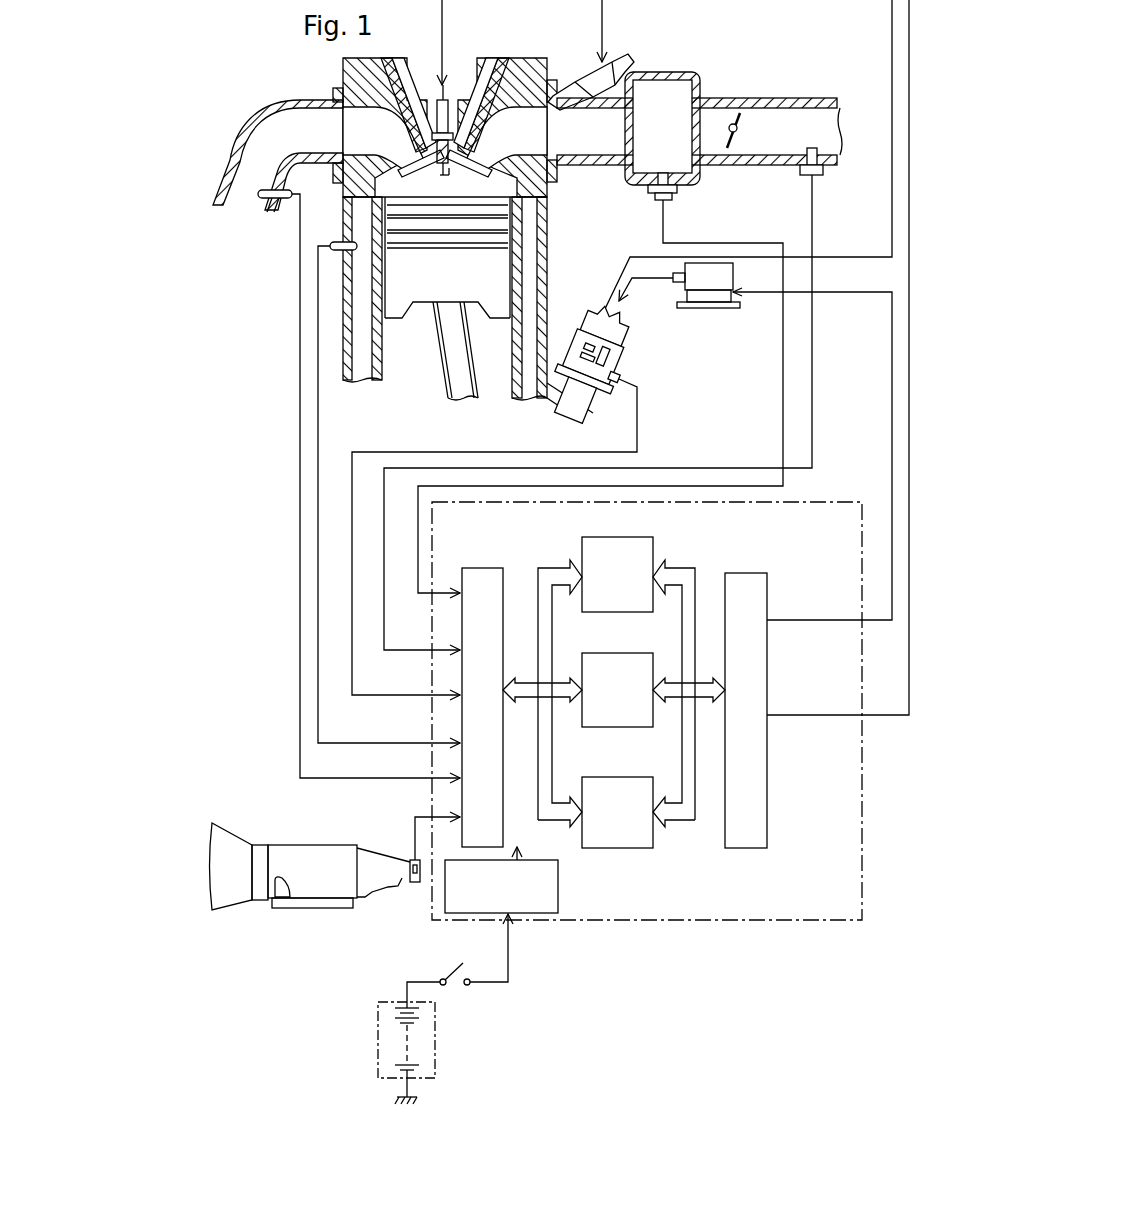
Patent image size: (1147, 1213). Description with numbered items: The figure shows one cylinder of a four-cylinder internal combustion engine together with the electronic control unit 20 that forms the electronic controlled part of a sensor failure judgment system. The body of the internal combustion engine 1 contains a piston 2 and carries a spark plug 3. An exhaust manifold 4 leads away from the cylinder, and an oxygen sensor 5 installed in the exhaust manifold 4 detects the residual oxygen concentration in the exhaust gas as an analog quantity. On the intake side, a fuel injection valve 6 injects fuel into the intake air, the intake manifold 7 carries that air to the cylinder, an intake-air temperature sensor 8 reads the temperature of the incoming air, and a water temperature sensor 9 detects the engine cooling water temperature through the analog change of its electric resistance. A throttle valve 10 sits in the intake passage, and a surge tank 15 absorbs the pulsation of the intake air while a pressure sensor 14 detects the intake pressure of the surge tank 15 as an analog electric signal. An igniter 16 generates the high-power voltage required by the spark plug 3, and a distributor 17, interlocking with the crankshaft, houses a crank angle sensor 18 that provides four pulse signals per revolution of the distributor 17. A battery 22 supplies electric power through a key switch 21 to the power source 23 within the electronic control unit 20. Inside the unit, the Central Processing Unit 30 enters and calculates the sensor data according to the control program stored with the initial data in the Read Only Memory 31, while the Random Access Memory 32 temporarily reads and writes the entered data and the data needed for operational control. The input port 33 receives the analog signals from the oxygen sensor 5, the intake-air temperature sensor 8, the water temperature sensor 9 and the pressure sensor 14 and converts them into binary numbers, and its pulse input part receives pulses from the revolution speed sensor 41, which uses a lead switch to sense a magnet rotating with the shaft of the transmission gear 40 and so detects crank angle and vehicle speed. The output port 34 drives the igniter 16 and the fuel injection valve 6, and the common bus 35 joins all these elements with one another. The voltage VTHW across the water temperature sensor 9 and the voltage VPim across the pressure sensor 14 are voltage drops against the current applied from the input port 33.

The body of the internal combustion engine 1 is at (428, 64).
The piston 2 is at (428, 305).
The spark plug 3 is at (447, 85).
The exhaust manifold 4 is at (305, 98).
The oxygen sensor 5 is at (276, 212).
The fuel injection valve 6 is at (623, 62).
The intake manifold 7 is at (736, 100).
The intake-air temperature sensor 8 is at (820, 178).
The water temperature sensor 9 is at (333, 241).
The throttle valve 10 is at (745, 118).
The pressure sensor 14 is at (650, 200).
The surge tank 15 is at (672, 92).
The igniter 16 is at (703, 310).
The distributor 17 is at (600, 318).
The crank angle sensor 18 is at (614, 385).
The electronic control unit 20 is at (840, 502).
The key switch 21 is at (462, 968).
The battery 22 is at (435, 1062).
The power source 23 is at (558, 885).
The Central Processing Unit 30 is at (656, 554).
The Read Only Memory 31 is at (650, 653).
The Random Access Memory 32 is at (648, 777).
The input port 33 is at (492, 568).
The output port 34 is at (768, 572).
The common bus 35 is at (550, 815).
The transmission gear 40 is at (265, 842).
The revolution speed sensor 41 is at (411, 887).